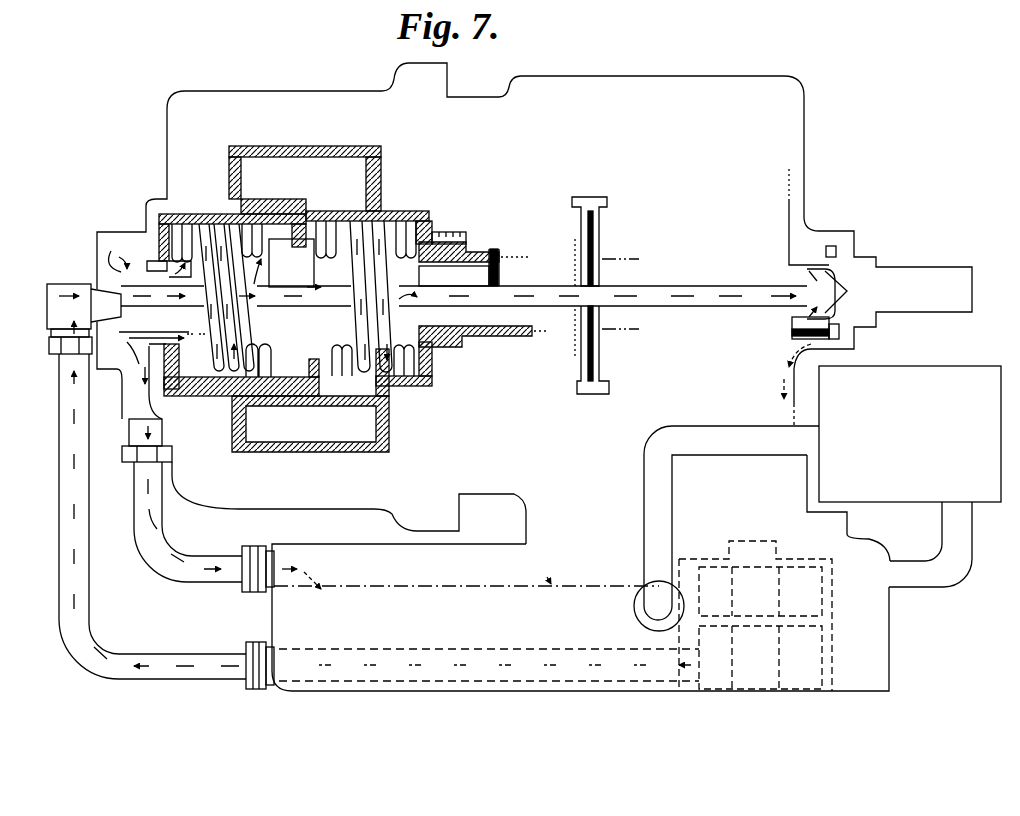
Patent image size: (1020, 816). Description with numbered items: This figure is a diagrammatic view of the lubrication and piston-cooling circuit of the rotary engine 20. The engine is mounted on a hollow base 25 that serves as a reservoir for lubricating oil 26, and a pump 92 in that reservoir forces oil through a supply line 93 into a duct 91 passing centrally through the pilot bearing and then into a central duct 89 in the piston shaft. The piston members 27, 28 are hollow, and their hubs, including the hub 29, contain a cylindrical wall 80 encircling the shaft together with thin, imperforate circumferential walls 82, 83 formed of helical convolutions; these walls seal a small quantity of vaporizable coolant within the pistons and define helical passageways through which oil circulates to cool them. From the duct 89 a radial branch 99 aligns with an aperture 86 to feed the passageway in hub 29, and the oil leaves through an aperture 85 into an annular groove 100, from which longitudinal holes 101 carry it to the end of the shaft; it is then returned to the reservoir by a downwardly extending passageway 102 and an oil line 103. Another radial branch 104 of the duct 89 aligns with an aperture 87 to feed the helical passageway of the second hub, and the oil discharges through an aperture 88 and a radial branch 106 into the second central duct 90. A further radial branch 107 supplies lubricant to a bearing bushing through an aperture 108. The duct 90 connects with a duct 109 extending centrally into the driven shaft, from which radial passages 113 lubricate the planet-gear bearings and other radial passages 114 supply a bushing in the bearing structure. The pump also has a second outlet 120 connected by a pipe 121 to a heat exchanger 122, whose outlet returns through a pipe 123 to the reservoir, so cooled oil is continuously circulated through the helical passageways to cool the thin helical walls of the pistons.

The rotary engine 20 is at (135, 214).
The hollow base 25 is at (432, 693).
The lubricating oil 26 is at (378, 587).
The piston member 27 is at (180, 208).
The piston member 28 is at (358, 145).
The hub 29 is at (231, 215).
The cylindrical wall 80 is at (182, 392).
The circumferential wall 82 is at (232, 404).
The circumferential wall 83 is at (346, 224).
The aperture 85 is at (176, 270).
The aperture 86 is at (259, 271).
The aperture 87 is at (343, 227).
The aperture 88 is at (484, 289).
The central duct 89 is at (268, 305).
The central duct 90 is at (488, 301).
The duct 91 is at (148, 309).
The pump 92 is at (711, 688).
The supply line 93 is at (60, 488).
The radial branch 99 is at (291, 263).
The annular groove 100 is at (192, 323).
The longitudinal holes 101 is at (122, 254).
The downwardly extending passageway 102 is at (130, 425).
The oil line 103 is at (173, 572).
The radial branch 104 is at (300, 285).
The radial branch 106 is at (393, 301).
The radial branch 107 is at (500, 280).
The aperture 108 is at (494, 255).
The duct 109 is at (705, 305).
The radial passages 113 is at (603, 240).
The radial passages 114 is at (843, 294).
The second outlet 120 is at (652, 608).
The pipe 121 is at (657, 498).
The heat exchanger 122 is at (889, 470).
The pipe 123 is at (907, 590).